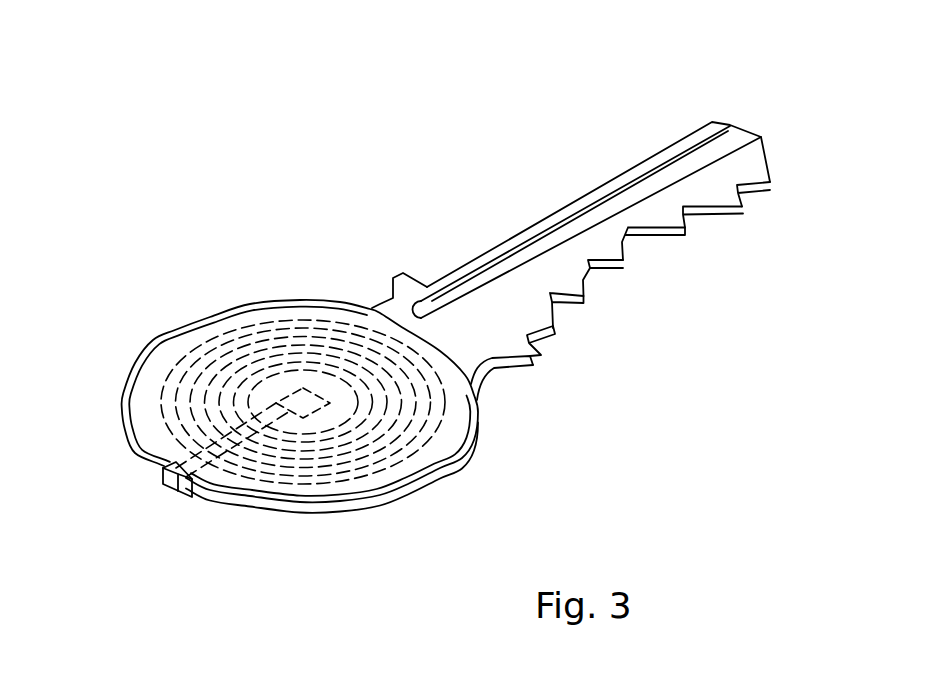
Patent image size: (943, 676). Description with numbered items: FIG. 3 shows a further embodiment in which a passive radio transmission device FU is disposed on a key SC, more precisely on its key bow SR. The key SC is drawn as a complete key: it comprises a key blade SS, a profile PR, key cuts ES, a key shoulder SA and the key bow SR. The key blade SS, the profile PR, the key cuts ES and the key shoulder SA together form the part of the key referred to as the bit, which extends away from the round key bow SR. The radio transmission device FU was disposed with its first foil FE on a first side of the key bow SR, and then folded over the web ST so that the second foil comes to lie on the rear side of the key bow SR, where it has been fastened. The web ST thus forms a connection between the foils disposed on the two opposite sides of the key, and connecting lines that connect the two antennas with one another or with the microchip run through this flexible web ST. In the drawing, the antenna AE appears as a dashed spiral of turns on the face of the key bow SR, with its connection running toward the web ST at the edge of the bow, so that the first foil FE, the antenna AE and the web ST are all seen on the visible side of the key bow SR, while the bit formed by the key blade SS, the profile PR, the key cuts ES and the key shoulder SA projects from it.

The profile PR is at (739, 128).
The key blade SS is at (608, 189).
The key SC is at (482, 332).
The antenna coil AE is at (267, 323).
The radio transmission device FU is at (178, 352).
The key bow SR is at (130, 372).
The key cuts ES is at (628, 234).
The key shoulder SA is at (528, 350).
The first foil FE is at (425, 457).
The web ST is at (172, 495).